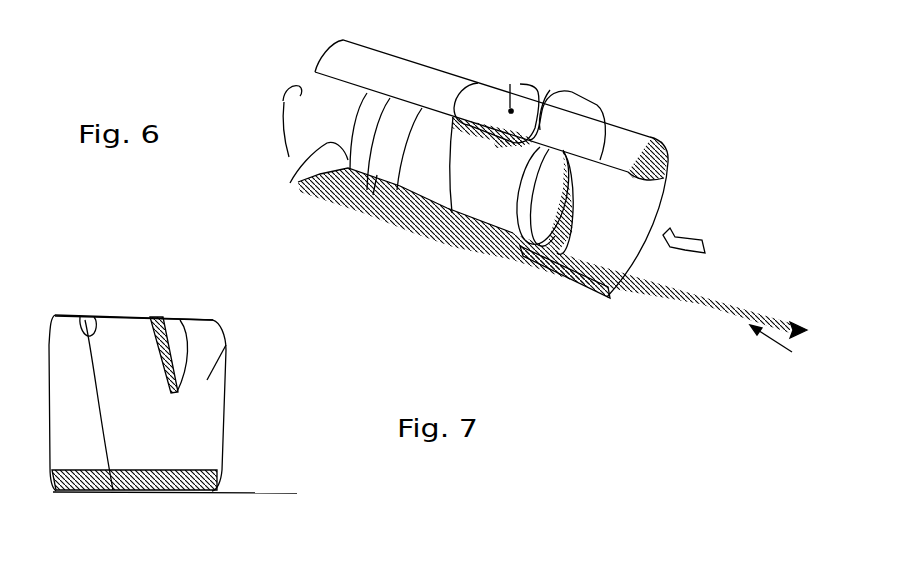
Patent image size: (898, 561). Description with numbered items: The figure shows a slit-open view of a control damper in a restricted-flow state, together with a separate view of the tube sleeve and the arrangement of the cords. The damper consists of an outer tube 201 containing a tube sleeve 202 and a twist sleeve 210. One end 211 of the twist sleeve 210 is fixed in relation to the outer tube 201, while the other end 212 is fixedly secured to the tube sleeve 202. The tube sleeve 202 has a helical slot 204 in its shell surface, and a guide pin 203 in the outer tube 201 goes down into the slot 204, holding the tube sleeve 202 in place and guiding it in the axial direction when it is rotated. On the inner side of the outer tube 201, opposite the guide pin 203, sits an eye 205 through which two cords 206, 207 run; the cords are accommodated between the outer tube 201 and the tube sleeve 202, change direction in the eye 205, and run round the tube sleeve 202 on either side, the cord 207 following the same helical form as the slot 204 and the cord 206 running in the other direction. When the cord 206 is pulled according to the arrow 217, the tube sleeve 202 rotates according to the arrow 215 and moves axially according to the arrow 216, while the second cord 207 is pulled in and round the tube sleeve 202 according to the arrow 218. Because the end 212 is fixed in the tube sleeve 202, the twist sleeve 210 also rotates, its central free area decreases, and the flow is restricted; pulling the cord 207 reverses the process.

In FIG. 6, the outer tube 201 is at (422, 64).
In FIG. 6, the tube sleeve 202 is at (487, 80).
In FIG. 7, the tube sleeve 202 is at (230, 337).
In FIG. 6, the guide pin 203 is at (512, 83).
In FIG. 7, the guide pin 203 is at (113, 316).
In FIG. 6, the helical slot 204 is at (550, 90).
In FIG. 7, the helical slot 204 is at (162, 316).
In FIG. 6, the eye 205 is at (481, 265).
In FIG. 7, the eye 205 is at (128, 488).
In FIG. 6, the cord 206 is at (683, 291).
In FIG. 7, the cord 206 is at (243, 490).
In FIG. 6, the cord 207 is at (453, 233).
In FIG. 7, the cord 207 is at (83, 317).
In FIG. 6, the twist sleeve 210 is at (373, 195).
In FIG. 6, the end of the twist sleeve 211 is at (290, 183).
In FIG. 6, the end of the twist sleeve 212 is at (600, 112).
In FIG. 6, the arrow 215 is at (283, 101).
In FIG. 6, the arrow 216 is at (693, 228).
In FIG. 6, the arrow 217 is at (790, 320).
In FIG. 6, the arrow 218 is at (753, 340).